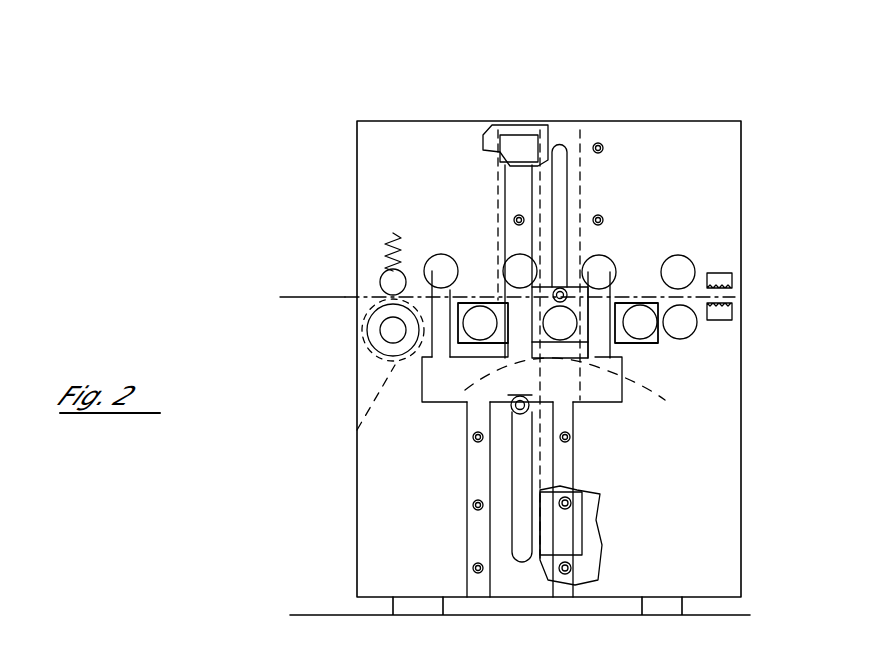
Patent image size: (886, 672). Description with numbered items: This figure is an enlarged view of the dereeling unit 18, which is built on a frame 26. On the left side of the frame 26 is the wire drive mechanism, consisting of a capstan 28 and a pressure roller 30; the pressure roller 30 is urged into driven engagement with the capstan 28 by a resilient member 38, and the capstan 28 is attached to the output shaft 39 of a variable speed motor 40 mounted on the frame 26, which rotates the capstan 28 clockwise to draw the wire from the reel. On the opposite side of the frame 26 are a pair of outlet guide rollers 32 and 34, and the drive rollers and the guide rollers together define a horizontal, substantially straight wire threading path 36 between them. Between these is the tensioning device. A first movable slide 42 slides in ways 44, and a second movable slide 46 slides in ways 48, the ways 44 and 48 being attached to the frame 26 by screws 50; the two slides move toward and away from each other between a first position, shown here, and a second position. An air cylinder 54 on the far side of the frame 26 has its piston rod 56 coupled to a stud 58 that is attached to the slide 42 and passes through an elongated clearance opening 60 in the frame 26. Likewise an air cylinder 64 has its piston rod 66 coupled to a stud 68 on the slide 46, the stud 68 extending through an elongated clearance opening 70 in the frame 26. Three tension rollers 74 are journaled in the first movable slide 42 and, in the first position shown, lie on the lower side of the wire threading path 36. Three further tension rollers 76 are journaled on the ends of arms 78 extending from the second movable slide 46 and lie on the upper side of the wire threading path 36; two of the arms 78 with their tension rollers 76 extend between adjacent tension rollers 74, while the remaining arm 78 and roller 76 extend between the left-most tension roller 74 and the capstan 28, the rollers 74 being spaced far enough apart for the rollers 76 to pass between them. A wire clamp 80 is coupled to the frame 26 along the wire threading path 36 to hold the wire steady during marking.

The dereeling unit 18 is at (437, 118).
The frame 26 is at (708, 125).
The capstan 28 is at (383, 352).
The pressure roller 30 is at (383, 276).
The outlet guide roller 32 is at (688, 258).
The outlet guide roller 34 is at (688, 338).
The wire threading path 36 is at (281, 296).
The resilient member 38 is at (388, 236).
The output shaft 39 is at (392, 330).
The variable speed motor 40 is at (485, 414).
The first movable slide 42 is at (566, 290).
The ways 44 is at (515, 175).
The second movable slide 46 is at (597, 402).
The ways 48 is at (468, 474).
The screws 50 is at (600, 146).
The air cylinder 54 is at (575, 513).
The piston rod 56 is at (620, 378).
The stud 58 is at (555, 288).
The elongated clearance opening 60 is at (562, 282).
The air cylinder 64 is at (523, 140).
The piston rod 66 is at (470, 432).
The stud 68 is at (518, 414).
The elongated clearance opening 70 is at (507, 548).
The tension rollers 74 is at (480, 316).
The tension rollers 76 is at (513, 256).
The arms 78 is at (632, 278).
The wire clamp 80 is at (729, 310).